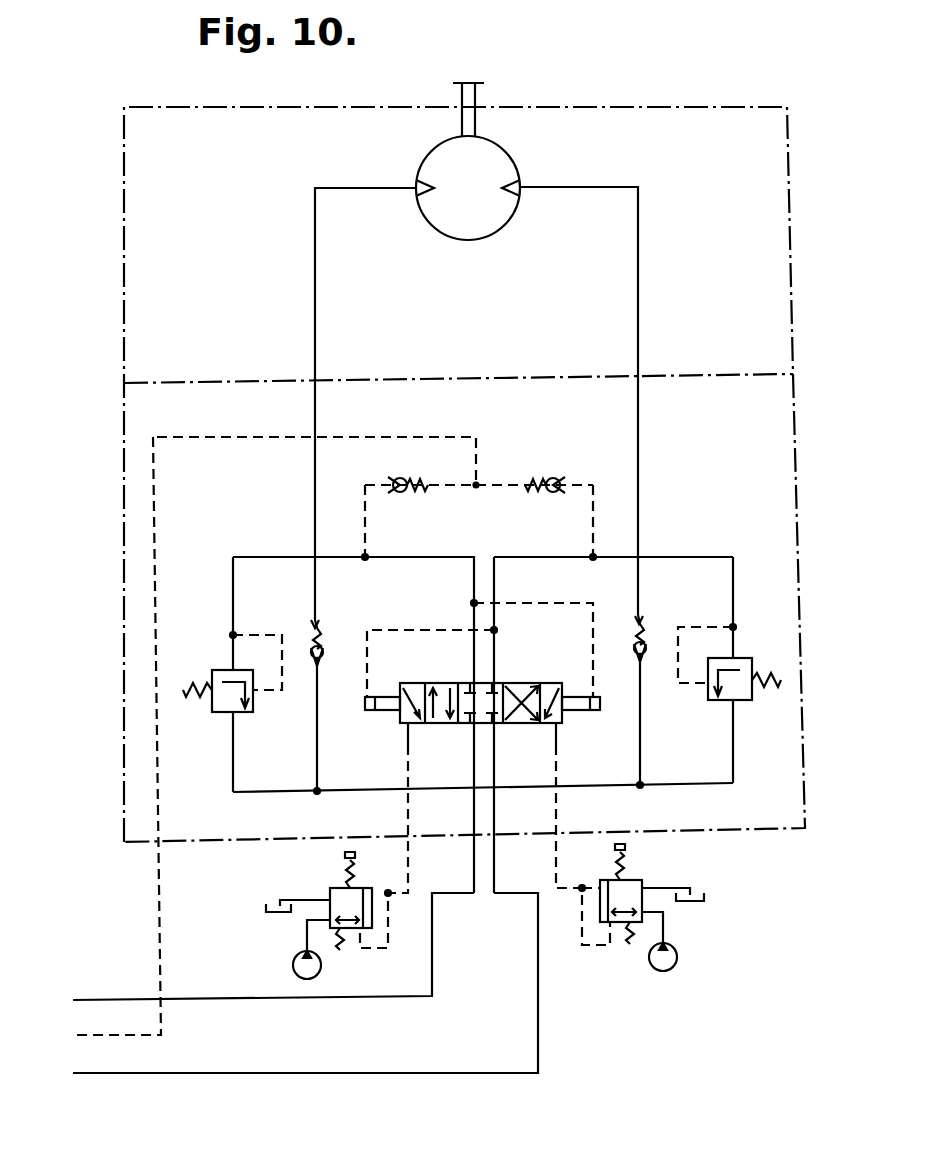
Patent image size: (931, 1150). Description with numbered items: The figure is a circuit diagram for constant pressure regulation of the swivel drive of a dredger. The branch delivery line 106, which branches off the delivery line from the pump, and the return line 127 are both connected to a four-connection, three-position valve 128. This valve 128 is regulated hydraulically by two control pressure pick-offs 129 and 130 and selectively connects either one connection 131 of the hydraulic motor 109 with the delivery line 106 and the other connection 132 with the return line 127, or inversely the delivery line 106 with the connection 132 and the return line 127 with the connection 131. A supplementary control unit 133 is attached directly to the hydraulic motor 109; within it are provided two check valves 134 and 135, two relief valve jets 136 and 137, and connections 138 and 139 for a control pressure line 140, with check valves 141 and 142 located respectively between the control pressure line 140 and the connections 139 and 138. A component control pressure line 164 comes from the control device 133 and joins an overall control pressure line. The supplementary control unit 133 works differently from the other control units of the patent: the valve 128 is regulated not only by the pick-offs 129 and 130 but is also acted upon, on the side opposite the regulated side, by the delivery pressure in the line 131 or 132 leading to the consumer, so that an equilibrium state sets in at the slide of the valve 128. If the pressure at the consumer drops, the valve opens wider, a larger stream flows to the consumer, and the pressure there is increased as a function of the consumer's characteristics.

The hydraulic motor 109 is at (516, 152).
The connection 131 is at (315, 292).
The connection 132 is at (638, 296).
The supplementary control unit 133 is at (124, 490).
The control pressure line 140 is at (380, 437).
The check valve 142 is at (405, 492).
The check valve 141 is at (550, 492).
The connection 138 is at (365, 560).
The connection 139 is at (593, 560).
The check valve 135 is at (326, 648).
The check valve 134 is at (646, 645).
The relief valve jet 137 is at (222, 712).
The relief valve jet 136 is at (740, 700).
The 4-connection/3-position valve 128 is at (510, 684).
The control pressure pick-off 130 is at (330, 890).
The control pressure pick-off 129 is at (642, 882).
The component control pressure line 164 is at (160, 925).
The branch delivery line 106 is at (235, 1000).
The return line 127 is at (400, 1073).